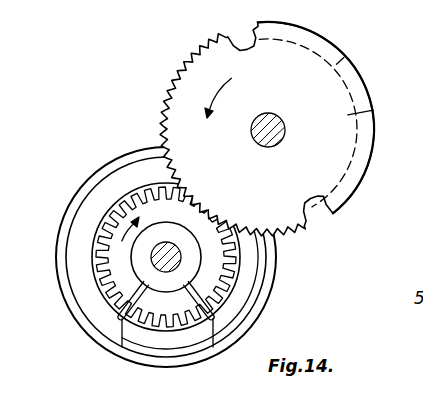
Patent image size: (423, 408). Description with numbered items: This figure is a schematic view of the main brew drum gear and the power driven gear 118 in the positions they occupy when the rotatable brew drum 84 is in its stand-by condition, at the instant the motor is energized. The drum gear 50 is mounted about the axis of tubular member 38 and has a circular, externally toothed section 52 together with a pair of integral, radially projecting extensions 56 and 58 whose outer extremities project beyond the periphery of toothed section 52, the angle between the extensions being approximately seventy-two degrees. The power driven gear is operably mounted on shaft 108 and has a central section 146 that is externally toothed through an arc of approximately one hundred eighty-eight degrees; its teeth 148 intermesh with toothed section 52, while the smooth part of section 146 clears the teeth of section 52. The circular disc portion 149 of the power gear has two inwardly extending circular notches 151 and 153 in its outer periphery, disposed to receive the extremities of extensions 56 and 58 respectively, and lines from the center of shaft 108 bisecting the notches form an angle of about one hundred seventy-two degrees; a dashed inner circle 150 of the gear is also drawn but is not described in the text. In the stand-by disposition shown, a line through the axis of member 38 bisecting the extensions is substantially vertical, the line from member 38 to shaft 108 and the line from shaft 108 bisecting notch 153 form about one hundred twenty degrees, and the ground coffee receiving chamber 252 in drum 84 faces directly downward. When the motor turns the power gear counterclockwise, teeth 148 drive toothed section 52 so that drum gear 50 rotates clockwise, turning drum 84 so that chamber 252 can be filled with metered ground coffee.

The toothed disc / ratchet wheel 118 is at (382, 129).
The shaft 108 is at (290, 134).
The dashed inner circle of disc 150 is at (342, 63).
The circular disc portion 149 is at (360, 112).
The circular notch 153 is at (219, 93).
The circular notch 151 is at (312, 198).
The central section 146 is at (343, 189).
The teeth 148 is at (328, 212).
The tubular member 38 is at (188, 258).
The drum gear 50 is at (86, 283).
The radially projecting extension 58 is at (136, 318).
The externally toothed section 52 is at (246, 288).
The radially projecting extension 56 is at (230, 327).
The drum 84 is at (282, 266).
The ground coffee receiving chamber 252 is at (168, 352).